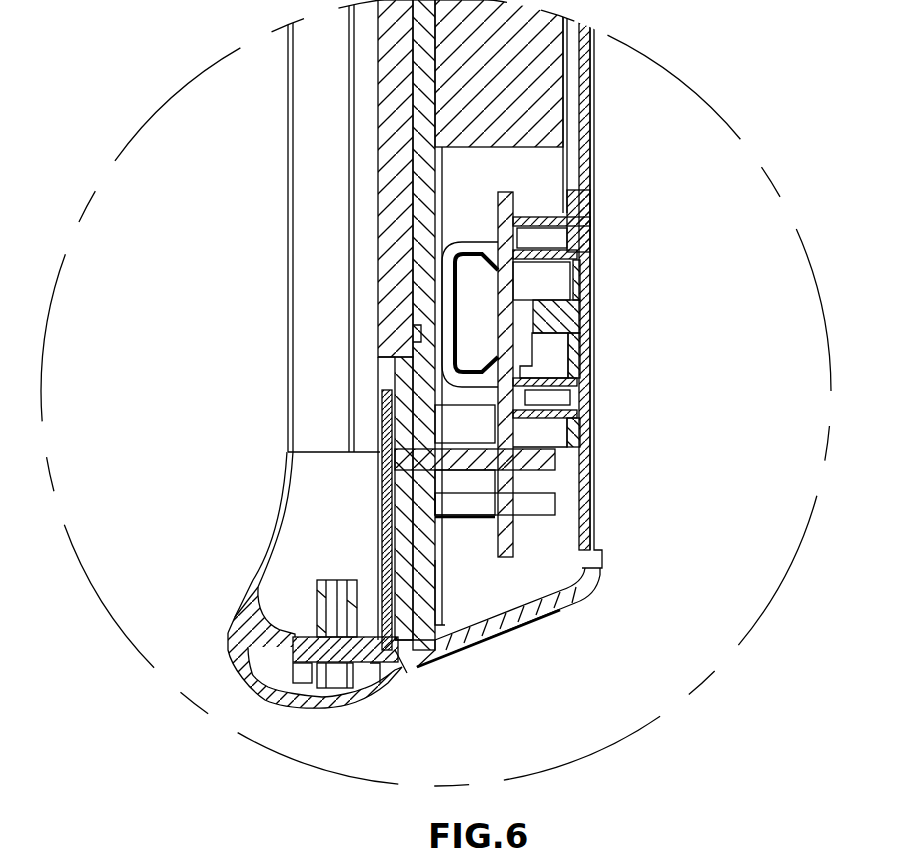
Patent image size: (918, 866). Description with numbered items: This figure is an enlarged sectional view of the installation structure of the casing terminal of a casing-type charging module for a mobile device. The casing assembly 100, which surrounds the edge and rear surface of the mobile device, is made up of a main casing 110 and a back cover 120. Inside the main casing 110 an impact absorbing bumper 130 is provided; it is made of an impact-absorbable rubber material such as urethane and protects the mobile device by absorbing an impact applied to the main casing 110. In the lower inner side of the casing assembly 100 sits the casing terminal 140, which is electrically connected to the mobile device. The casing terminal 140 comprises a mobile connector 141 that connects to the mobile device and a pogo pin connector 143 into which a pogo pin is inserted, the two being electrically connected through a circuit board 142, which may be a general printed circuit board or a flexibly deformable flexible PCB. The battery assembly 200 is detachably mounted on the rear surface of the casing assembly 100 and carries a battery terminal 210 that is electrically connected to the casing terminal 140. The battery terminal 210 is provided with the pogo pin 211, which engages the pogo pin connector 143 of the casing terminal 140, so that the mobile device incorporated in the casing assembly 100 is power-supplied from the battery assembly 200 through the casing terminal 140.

The casing assembly 100 is at (285, 281).
The main casing 110 is at (250, 678).
The back cover 120 is at (390, 143).
The impact absorbing bumper 130 is at (238, 622).
The casing terminal 140 is at (398, 667).
The mobile connector 141 is at (317, 600).
The circuit board 142 is at (340, 665).
The pogo pin connector 143 is at (405, 583).
The battery assembly 200 is at (600, 302).
The battery terminal 210 is at (515, 431).
The pogo pin 211 is at (548, 502).